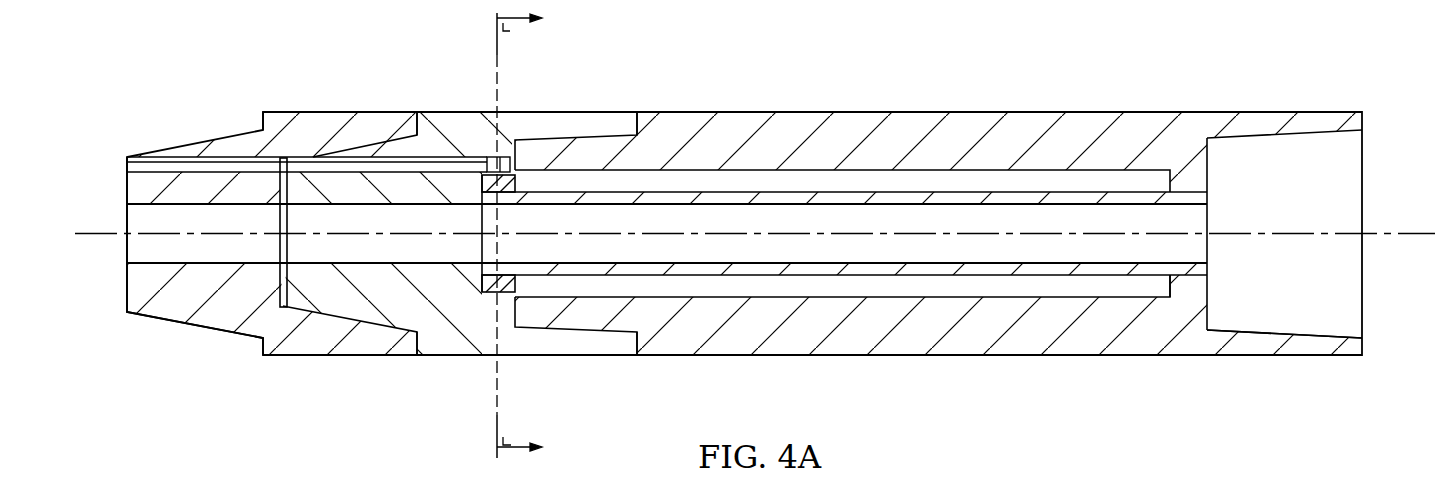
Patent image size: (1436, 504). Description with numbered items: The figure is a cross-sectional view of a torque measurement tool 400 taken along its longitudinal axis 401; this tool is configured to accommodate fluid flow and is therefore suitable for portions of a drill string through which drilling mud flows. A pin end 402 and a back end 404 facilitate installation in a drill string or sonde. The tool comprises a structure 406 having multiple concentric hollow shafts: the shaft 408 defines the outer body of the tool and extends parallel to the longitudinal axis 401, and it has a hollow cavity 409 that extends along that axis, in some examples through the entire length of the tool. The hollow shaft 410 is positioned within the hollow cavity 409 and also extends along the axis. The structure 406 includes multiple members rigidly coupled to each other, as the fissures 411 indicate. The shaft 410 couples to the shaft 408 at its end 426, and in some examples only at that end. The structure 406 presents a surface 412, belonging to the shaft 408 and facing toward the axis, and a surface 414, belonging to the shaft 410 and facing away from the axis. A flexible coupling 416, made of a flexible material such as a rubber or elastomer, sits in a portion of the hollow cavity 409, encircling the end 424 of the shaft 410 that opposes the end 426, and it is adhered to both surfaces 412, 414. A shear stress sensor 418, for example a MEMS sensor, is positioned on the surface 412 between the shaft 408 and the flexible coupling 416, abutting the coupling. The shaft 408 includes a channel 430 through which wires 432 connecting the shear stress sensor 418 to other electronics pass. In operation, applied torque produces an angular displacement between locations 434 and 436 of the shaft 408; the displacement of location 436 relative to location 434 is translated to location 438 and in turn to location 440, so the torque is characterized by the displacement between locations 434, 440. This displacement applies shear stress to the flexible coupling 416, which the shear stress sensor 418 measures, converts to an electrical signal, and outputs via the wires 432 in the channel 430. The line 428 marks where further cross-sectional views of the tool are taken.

The torque measurement tool 400 is at (838, 67).
The longitudinal axis 401 is at (105, 231).
The pin end 402 is at (212, 338).
The back end 404 is at (1353, 257).
The structure 406 is at (447, 113).
The shaft 408 is at (1098, 112).
The hollow cavity 409 is at (983, 184).
The hollow shaft 410 is at (795, 200).
The fissures 411 is at (634, 134).
The surface 412 is at (525, 325).
The surface 414 is at (681, 200).
The flexible coupling 416 is at (480, 153).
The shear stress sensor 418 is at (505, 181).
The end 424 is at (505, 200).
The end 426 is at (1170, 197).
The line 428 is at (494, 440).
The channel 430 is at (224, 155).
The wires 432 is at (127, 160).
The location 434 is at (482, 303).
The location 436 is at (1193, 335).
The location 438 is at (1182, 284).
The location 440 is at (483, 251).